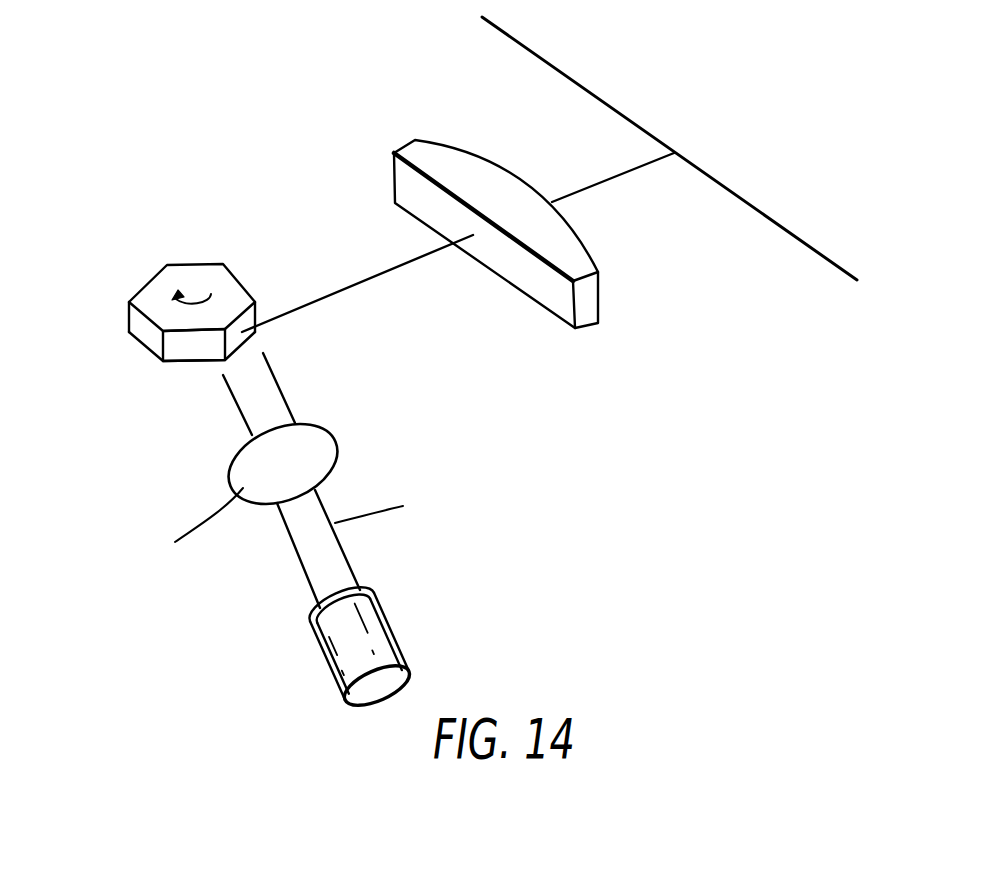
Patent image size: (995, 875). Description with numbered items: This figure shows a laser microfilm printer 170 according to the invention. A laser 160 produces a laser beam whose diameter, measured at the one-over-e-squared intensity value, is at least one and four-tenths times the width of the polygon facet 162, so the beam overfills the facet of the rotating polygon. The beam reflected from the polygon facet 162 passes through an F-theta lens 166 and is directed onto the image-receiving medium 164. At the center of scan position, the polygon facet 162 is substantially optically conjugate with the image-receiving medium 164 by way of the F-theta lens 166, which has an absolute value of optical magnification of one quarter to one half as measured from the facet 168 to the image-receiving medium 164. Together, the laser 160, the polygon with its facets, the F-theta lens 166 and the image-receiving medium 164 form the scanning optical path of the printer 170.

The laser 160 is at (387, 633).
The polygon facet 162 is at (138, 343).
The image-receiving medium 164 is at (570, 75).
The F-theta lens 166 is at (535, 287).
The facet 168 is at (185, 355).
The laser microfilm printer 170 is at (240, 147).